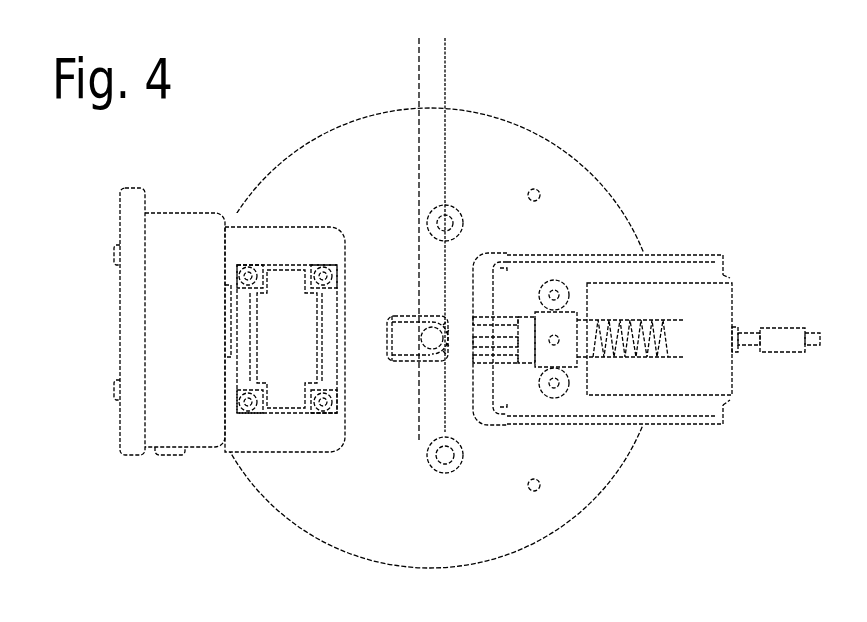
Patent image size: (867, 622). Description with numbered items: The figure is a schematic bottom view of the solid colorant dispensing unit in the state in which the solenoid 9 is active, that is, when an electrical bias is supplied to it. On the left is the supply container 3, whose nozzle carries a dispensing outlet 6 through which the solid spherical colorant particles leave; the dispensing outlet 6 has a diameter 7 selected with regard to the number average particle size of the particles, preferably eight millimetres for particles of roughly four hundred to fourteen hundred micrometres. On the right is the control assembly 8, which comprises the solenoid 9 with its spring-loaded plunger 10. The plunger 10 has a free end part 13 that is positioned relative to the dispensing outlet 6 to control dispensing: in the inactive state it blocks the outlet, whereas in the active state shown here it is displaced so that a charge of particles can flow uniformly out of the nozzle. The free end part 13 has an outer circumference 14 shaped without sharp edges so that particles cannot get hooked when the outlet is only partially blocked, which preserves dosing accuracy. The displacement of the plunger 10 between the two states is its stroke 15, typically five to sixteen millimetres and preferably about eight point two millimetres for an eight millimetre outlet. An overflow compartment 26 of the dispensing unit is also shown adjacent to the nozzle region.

The supply container 3 is at (507, 110).
The dispensing outlet 6 is at (423, 341).
The diameter 7 is at (470, 424).
The control assembly 8 is at (683, 245).
The solenoid 9 is at (717, 277).
The spring-loaded plunger 10 is at (522, 303).
The free end part 13 is at (440, 310).
The outer circumference 14 is at (437, 353).
The stroke 15 is at (478, 44).
The overflow compartment 26 is at (387, 344).